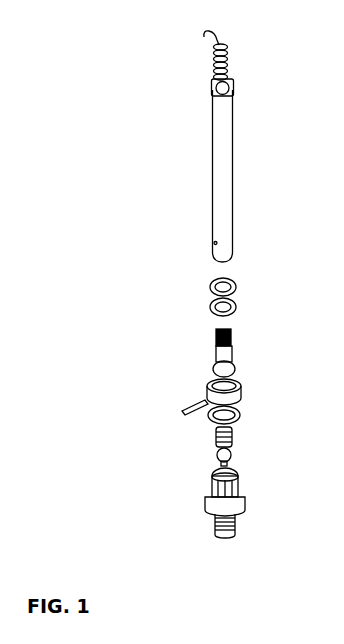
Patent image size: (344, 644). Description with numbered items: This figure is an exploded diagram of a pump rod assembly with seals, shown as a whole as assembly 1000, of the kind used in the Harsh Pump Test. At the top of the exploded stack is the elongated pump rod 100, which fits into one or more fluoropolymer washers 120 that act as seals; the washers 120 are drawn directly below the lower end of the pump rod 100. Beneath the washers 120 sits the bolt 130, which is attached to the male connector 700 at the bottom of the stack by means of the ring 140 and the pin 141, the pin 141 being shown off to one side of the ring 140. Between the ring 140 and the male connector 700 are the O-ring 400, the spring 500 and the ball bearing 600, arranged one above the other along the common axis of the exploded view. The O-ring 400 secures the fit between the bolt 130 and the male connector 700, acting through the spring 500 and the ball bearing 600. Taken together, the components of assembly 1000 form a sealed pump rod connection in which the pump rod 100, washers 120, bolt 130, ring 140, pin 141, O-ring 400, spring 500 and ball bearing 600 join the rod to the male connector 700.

The fluid sampling assembly 1000 is at (60, 78).
The pump rod 100 is at (234, 160).
The fluoropolymer washers 120 is at (247, 295).
The bolt 130 is at (230, 338).
The ring 140 is at (244, 391).
The pin 141 is at (189, 400).
The O-ring 400 is at (238, 421).
The spring 500 is at (216, 437).
The ball bearing 600 is at (233, 459).
The male connector 700 is at (205, 497).